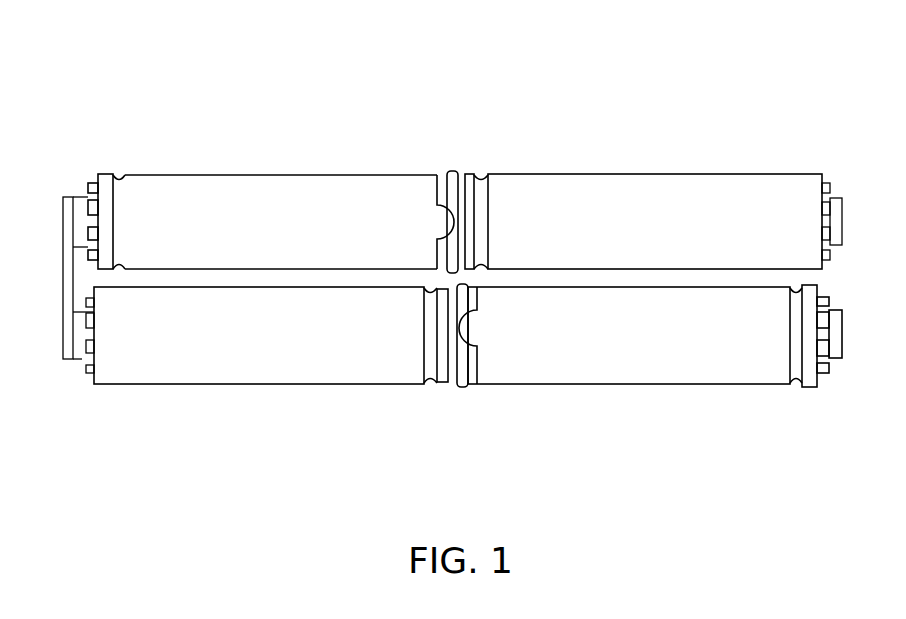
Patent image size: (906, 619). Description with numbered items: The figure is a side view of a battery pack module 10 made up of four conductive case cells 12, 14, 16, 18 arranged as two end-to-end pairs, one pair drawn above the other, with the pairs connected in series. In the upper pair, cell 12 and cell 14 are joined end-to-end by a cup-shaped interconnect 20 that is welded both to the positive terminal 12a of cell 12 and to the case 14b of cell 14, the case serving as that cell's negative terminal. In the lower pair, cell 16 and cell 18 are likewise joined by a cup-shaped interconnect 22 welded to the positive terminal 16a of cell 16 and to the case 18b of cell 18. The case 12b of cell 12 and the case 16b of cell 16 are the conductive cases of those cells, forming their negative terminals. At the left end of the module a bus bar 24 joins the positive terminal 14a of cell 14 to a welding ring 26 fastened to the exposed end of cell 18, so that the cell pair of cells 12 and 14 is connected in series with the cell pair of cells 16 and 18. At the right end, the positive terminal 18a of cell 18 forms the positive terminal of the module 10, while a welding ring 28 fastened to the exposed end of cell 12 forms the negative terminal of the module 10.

The battery pack module 10 is at (609, 73).
The conductive case cell 12 is at (599, 177).
The positive terminal of cell 12 12a is at (465, 222).
The case of cell 12 12b is at (649, 174).
The conductive case cell 14 is at (248, 177).
The positive terminal of cell 14 14a is at (88, 197).
The case of cell 14 14b is at (291, 175).
The conductive case cell 16 is at (271, 381).
The positive terminal of cell 16 16a is at (447, 329).
The case of cell 16 16b is at (313, 386).
The conductive case cell 18 is at (664, 383).
The positive terminal of cell 18 18a is at (837, 360).
The case of cell 18 18b is at (701, 386).
The cup-shaped interconnect 20 is at (445, 190).
The cup-shaped interconnect 22 is at (475, 305).
The bus bar 24 is at (63, 278).
The welding ring 26 is at (78, 360).
The welding ring 28 is at (840, 197).